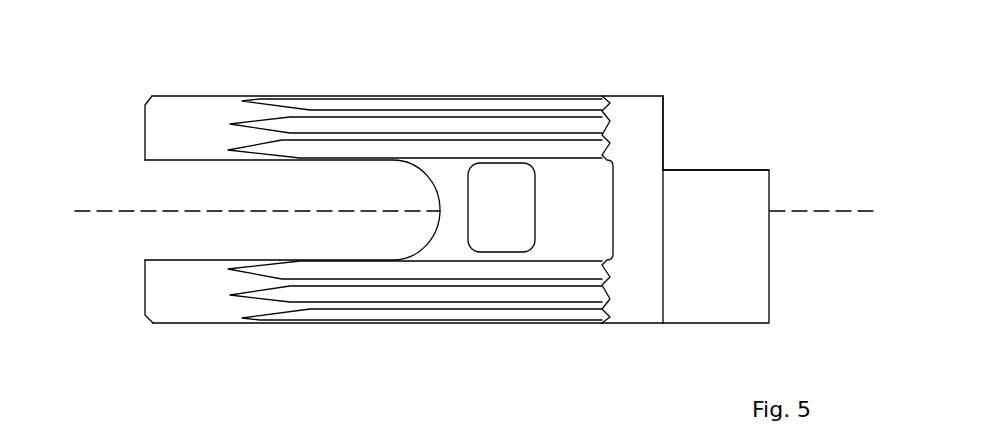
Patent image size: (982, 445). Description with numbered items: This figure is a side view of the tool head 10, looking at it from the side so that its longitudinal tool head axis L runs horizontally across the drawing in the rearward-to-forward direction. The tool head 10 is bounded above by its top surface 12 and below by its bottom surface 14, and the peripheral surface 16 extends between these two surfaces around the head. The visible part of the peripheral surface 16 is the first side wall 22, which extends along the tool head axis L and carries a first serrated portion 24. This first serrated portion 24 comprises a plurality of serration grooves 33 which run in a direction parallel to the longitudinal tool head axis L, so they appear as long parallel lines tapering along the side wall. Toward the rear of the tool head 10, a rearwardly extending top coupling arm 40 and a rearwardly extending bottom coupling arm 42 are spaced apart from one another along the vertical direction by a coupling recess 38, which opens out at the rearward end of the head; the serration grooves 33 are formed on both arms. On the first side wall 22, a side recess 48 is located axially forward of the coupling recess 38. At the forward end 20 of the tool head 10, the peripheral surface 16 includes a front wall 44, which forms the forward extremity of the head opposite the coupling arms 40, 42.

The tool head 10 is at (138, 52).
The top surface 12 is at (517, 95).
The bottom surface 14 is at (233, 323).
The peripheral surface 16 is at (746, 253).
The forward end 20 is at (795, 124).
The first side wall 22 is at (316, 124).
The first serrated portion 24 is at (386, 132).
The serration grooves 33 is at (500, 150).
The coupling recess 38 is at (180, 190).
The top coupling arm 40 is at (173, 138).
The bottom coupling arm 42 is at (152, 292).
The front wall 44 is at (692, 307).
The side recess 48 is at (505, 222).
The longitudinal tool head axis L is at (817, 210).